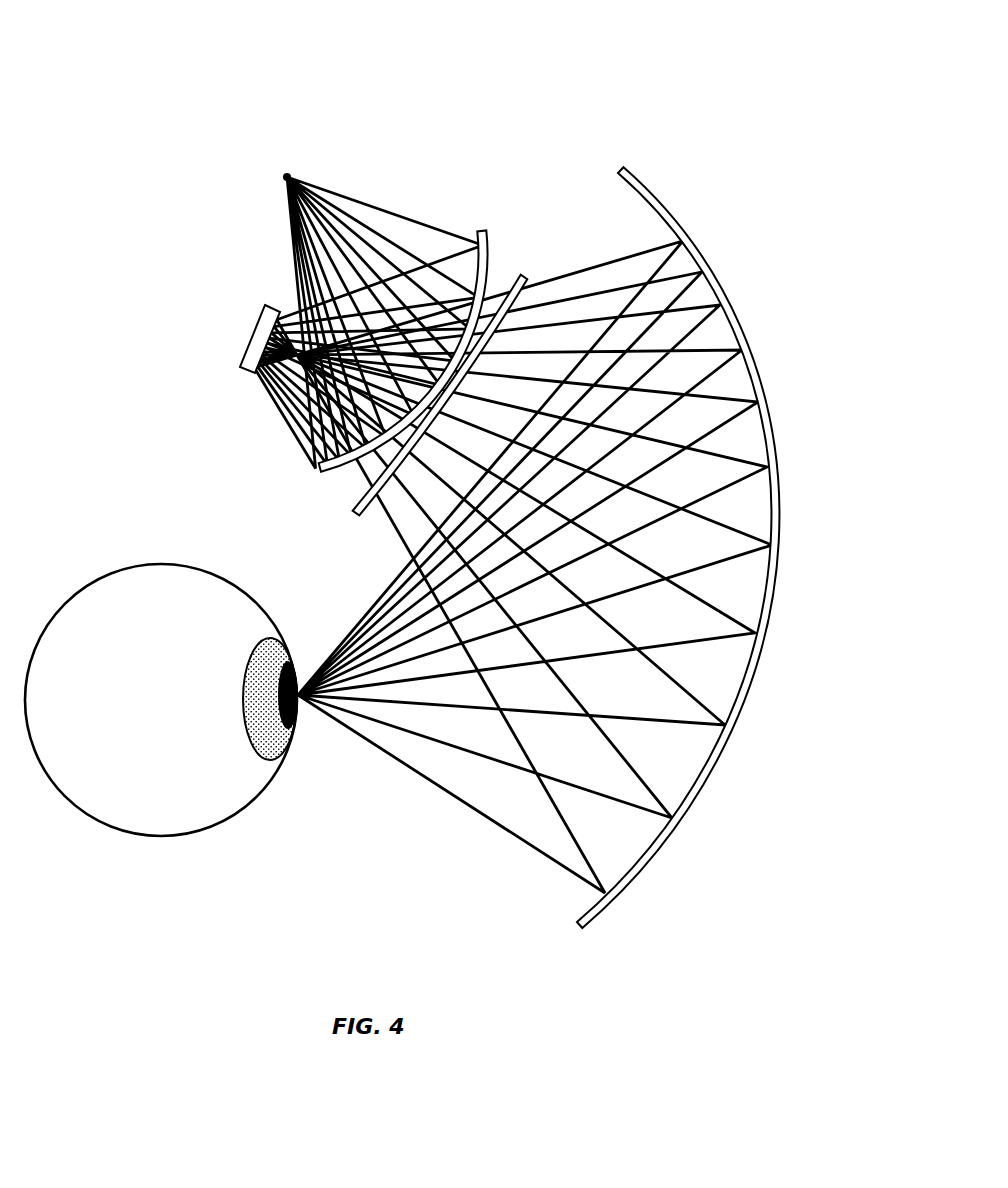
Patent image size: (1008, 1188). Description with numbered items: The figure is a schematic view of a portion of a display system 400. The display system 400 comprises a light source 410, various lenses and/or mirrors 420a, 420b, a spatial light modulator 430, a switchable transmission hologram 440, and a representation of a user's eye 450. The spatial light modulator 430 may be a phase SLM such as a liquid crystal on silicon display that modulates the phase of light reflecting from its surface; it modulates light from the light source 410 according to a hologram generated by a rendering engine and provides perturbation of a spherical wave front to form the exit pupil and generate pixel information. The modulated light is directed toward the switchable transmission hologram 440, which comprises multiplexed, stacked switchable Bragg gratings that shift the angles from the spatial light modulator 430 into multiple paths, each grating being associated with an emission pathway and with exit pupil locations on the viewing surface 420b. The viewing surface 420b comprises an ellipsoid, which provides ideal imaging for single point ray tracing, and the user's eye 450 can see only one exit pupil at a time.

The display system 400 is at (451, 116).
The light source 410 is at (287, 172).
The lens and/or mirror 420a is at (488, 248).
The viewing surface 420b is at (664, 204).
The spatial light modulator 430 is at (258, 322).
The switchable transmission hologram 440 is at (525, 281).
The user's eye 450 is at (280, 810).